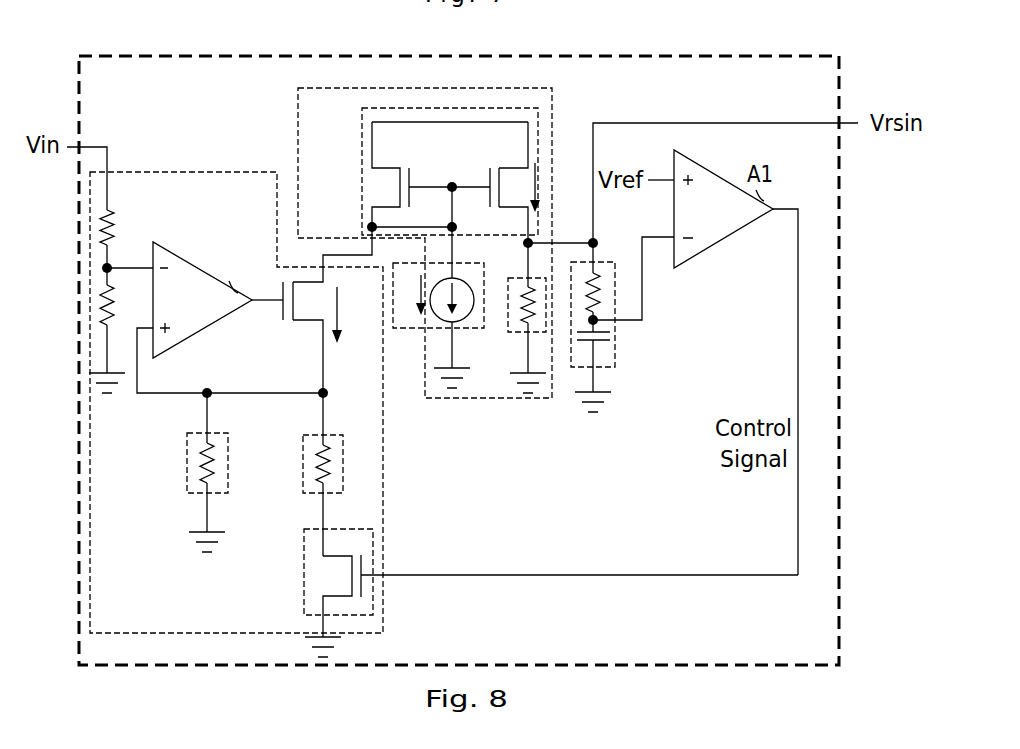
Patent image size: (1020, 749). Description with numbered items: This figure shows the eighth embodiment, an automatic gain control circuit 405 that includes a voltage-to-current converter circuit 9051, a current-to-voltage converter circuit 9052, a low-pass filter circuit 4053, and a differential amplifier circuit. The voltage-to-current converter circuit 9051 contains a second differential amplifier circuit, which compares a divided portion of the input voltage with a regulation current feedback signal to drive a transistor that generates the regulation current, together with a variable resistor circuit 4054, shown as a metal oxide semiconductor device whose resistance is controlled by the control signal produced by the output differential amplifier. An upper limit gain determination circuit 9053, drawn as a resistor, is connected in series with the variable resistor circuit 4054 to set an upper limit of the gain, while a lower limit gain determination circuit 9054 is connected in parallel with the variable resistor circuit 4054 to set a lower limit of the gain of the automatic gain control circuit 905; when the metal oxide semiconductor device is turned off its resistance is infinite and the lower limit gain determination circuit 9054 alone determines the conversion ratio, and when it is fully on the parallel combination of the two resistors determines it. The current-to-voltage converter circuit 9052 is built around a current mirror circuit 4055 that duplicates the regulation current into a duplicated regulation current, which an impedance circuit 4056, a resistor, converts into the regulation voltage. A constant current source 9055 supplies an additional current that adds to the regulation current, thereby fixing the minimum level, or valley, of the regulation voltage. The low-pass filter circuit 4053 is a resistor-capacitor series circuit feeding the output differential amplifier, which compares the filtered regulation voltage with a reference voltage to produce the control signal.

The automatic gain control circuit 405 is at (826, 656).
The automatic gain control circuit 905 is at (860, 53).
The voltage-to-current converter circuit 9051 is at (265, 204).
The current-to-voltage converter circuit 9052 is at (360, 120).
The upper limit gain determination circuit 9053 is at (302, 445).
The lower limit gain determination circuit 9054 is at (186, 443).
The constant current source 9055 is at (417, 329).
The low-pass filter circuit 4053 is at (615, 339).
The variable resistor circuit 4054 is at (302, 578).
The current mirror circuit 4055 is at (420, 107).
The impedance circuit 4056 is at (508, 307).